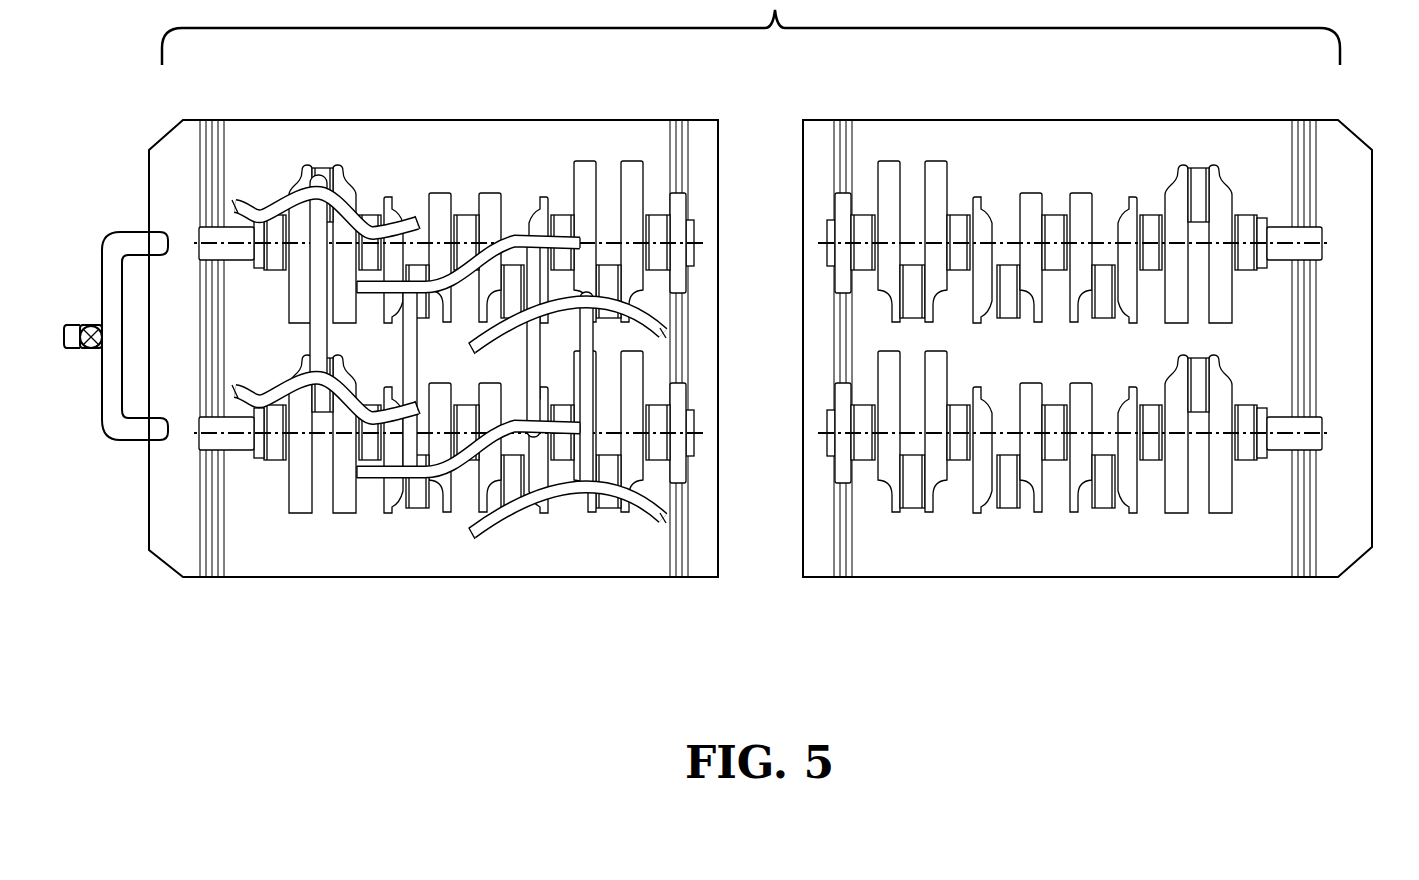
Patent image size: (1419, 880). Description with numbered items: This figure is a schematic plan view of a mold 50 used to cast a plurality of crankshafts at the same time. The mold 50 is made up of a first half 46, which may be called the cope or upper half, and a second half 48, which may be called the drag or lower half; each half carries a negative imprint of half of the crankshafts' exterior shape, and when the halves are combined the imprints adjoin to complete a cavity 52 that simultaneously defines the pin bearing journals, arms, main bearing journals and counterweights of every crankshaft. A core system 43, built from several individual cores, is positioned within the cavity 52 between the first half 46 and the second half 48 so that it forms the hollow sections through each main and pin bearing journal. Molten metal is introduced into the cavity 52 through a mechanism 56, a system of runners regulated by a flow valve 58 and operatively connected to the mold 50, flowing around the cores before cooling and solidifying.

The core system 43 is at (658, 356).
The first half 46 is at (1355, 492).
The second half 48 is at (718, 517).
The mold 50 is at (1111, 314).
The cavity 52 is at (1010, 497).
The mechanism 56 is at (83, 310).
The flow valve 58 is at (80, 350).